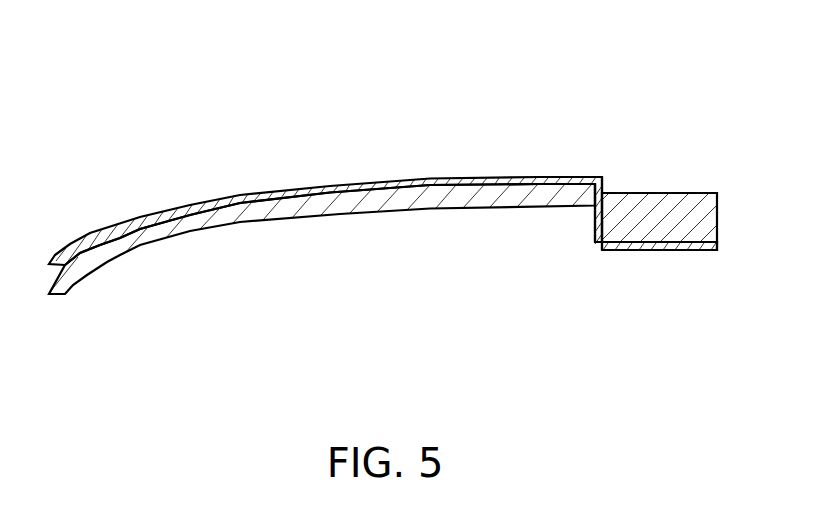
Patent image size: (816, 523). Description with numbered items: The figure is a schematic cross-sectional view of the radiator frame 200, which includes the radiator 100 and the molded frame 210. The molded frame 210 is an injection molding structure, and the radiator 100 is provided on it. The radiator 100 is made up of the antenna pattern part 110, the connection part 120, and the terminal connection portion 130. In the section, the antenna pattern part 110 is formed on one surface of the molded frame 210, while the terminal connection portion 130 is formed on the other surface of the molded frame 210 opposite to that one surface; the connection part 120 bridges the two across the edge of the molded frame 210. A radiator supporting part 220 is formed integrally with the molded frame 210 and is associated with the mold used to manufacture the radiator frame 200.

The radiator frame 200 is at (180, 43).
The radiator 100 is at (152, 182).
The antenna pattern part 110 is at (306, 187).
The connection part 120 is at (595, 222).
The terminal connection portion 130 is at (665, 245).
The molded frame 210 is at (377, 205).
The radiator supporting part 220 is at (678, 202).